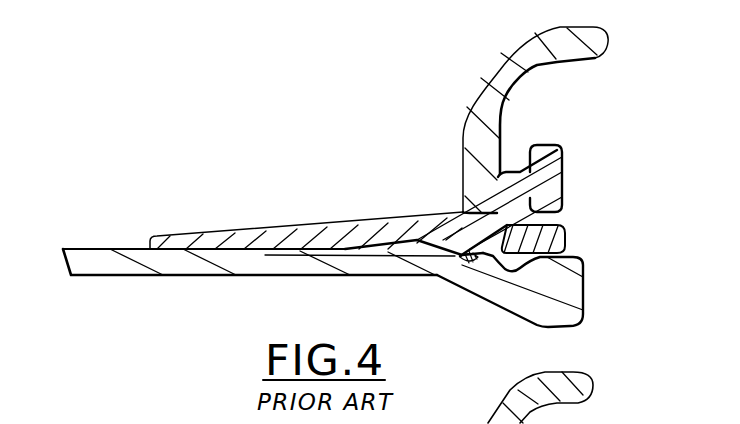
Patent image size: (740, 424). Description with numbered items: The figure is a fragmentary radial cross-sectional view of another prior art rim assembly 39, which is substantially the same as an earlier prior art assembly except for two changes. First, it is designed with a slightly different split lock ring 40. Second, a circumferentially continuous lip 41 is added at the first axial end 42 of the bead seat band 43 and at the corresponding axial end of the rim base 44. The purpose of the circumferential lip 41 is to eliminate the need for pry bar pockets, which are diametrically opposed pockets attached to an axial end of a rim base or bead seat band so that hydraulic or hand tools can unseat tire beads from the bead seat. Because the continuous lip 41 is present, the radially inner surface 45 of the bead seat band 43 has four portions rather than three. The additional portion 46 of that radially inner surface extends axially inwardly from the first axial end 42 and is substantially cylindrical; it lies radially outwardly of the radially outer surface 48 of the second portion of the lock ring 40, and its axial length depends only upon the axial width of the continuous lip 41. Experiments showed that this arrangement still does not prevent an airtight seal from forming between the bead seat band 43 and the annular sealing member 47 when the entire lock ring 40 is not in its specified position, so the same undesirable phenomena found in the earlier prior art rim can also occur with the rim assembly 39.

The prior art rim assembly 39 is at (178, 193).
The split lock ring 40 is at (567, 243).
The circumferentially continuous lip 41 is at (545, 151).
The first axial end 42 is at (563, 199).
The bead seat band 43 is at (252, 231).
The rim base 44 is at (132, 266).
The radially inner surface 45 is at (293, 252).
The additional portion 46 is at (548, 195).
The annular sealing member 47 is at (458, 272).
The radially outer surface 48 is at (564, 221).